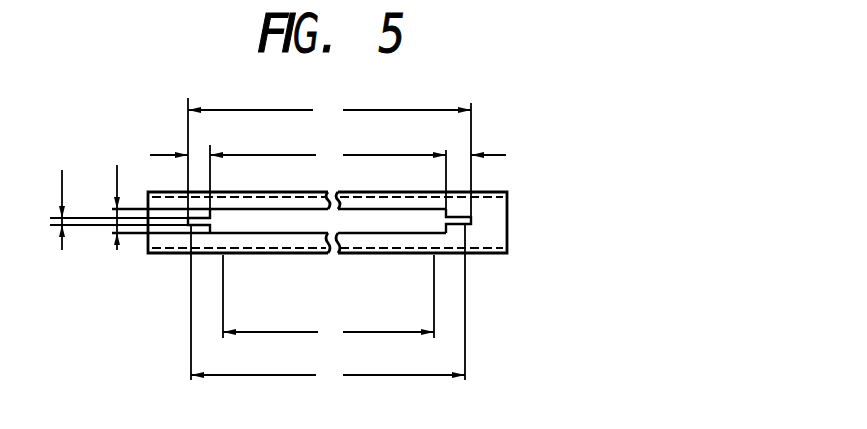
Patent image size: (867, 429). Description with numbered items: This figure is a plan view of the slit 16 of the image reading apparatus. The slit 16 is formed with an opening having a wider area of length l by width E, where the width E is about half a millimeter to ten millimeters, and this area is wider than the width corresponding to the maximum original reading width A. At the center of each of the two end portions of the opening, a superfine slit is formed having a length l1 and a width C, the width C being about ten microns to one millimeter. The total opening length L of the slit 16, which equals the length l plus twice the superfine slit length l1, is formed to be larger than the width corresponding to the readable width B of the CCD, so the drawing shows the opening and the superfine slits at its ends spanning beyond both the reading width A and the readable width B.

The slit 16 is at (507, 213).
The total opening length L is at (329, 157).
The opening length l is at (328, 178).
The superfine slit length l1 is at (328, 139).
The maximum original reading width A is at (328, 301).
The readable width B is at (328, 307).
The superfine slit width C is at (115, 210).
The opening width E is at (110, 207).